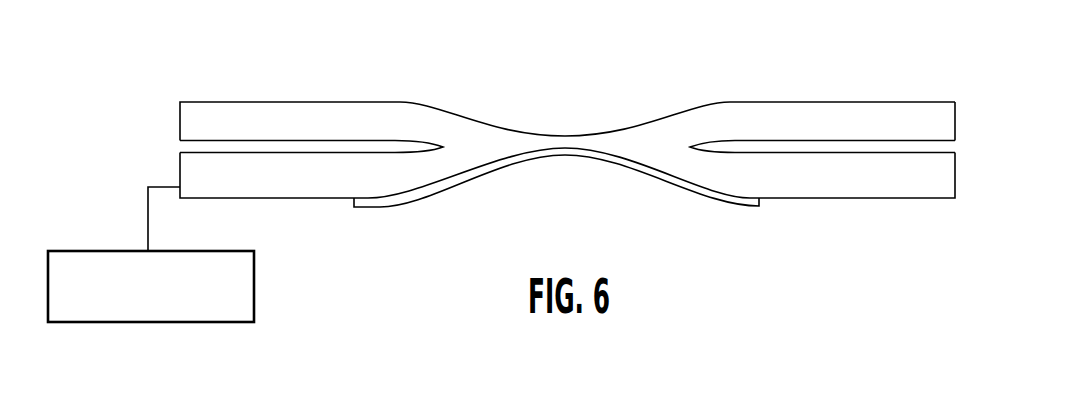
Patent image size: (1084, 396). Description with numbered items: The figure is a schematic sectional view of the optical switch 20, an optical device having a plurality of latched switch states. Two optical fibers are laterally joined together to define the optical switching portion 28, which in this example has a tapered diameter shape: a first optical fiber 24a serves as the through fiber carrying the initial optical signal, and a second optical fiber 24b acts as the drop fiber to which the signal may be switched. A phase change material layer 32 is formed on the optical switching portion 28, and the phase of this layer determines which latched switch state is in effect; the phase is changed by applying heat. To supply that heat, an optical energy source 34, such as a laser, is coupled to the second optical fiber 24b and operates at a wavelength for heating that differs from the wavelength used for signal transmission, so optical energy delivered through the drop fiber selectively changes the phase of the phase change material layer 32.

The optical switch 20 is at (572, 73).
The first optical fiber 24a is at (180, 110).
The second optical fiber 24b is at (180, 173).
The optical switching portion 28 is at (600, 110).
The phase change material layer 32 is at (477, 176).
The optical energy source 34 is at (177, 323).